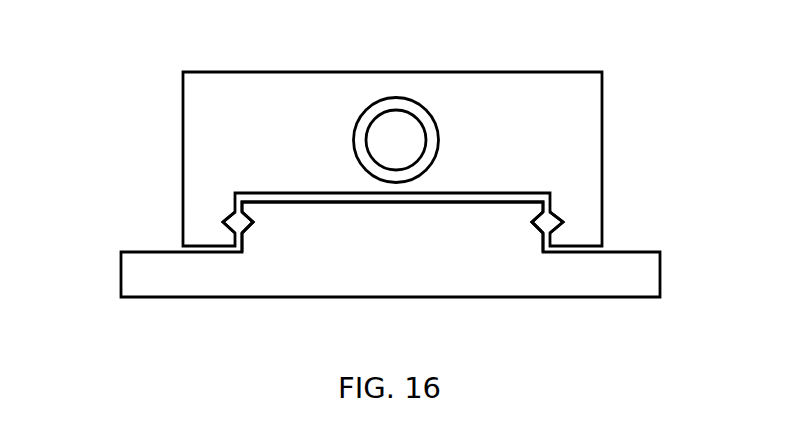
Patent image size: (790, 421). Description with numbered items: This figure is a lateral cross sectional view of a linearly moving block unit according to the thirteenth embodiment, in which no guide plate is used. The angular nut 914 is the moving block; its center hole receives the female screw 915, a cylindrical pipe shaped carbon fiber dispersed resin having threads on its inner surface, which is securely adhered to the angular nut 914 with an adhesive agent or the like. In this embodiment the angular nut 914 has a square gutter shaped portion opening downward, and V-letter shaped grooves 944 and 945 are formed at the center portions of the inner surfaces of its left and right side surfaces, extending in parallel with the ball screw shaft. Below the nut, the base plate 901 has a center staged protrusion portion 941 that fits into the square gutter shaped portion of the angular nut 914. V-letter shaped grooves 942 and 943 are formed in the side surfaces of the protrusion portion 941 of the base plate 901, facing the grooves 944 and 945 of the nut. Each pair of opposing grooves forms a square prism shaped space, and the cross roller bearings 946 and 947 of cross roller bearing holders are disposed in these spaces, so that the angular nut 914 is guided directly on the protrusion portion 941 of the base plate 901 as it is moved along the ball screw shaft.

The base plate 901 is at (417, 285).
The angular nut 914 is at (247, 85).
The female screw 915 is at (403, 103).
The center staged protrusion portion 941 is at (383, 215).
The V-letter shaped groove 942 is at (253, 226).
The V-letter shaped groove 943 is at (532, 226).
The V-letter shaped groove 944 is at (228, 217).
The V-letter shaped groove 945 is at (558, 208).
The cross roller bearing 946 is at (233, 223).
The cross roller bearing 947 is at (553, 223).